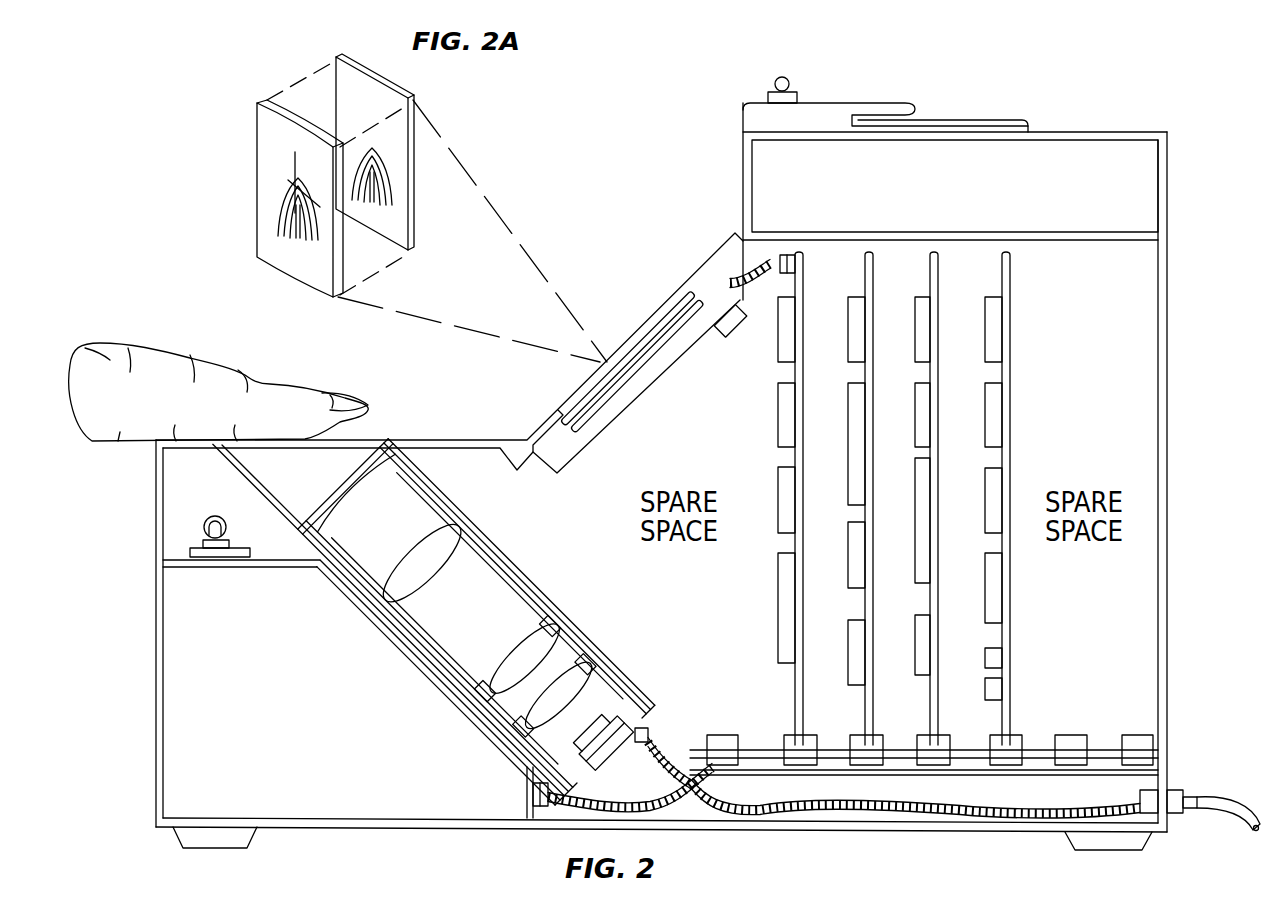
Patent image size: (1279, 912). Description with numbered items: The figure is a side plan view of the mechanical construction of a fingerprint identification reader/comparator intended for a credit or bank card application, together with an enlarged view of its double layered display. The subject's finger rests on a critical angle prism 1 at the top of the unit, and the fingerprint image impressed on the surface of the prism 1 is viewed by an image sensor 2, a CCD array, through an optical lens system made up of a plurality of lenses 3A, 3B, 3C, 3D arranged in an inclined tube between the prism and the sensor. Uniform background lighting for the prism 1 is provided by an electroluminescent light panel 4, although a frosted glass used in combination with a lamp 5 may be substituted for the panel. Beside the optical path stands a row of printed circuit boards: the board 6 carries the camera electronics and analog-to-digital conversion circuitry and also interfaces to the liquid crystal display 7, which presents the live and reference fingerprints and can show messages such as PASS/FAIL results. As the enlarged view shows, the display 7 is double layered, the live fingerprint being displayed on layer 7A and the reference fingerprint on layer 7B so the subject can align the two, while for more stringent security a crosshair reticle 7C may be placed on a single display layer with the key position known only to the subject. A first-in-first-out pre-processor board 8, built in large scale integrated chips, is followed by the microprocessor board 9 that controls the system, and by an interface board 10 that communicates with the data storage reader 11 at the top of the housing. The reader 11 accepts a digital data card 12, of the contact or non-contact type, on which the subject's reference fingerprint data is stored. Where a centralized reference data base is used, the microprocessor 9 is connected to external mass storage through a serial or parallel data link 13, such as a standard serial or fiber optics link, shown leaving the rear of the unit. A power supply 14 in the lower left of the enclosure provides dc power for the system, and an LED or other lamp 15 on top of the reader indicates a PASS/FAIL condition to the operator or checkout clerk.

In FIG. 2, the critical angle prism 1 is at (367, 438).
In FIG. 2, the image sensor 2 is at (597, 737).
In FIG. 2, the lens 3A is at (374, 491).
In FIG. 2, the lens 3B is at (436, 542).
In FIG. 2, the lens 3C is at (529, 640).
In FIG. 2, the lens 3D is at (577, 677).
In FIG. 2, the electroluminescent light panel 4 is at (250, 480).
In FIG. 2, the lamp 5 is at (203, 527).
In FIG. 2, the printed circuit board 6 is at (778, 603).
In FIG. 2, the liquid crystal display 7 is at (637, 337).
In FIG. 2A, the display layer 7A is at (262, 114).
In FIG. 2A, the display layer 7B is at (347, 78).
In FIG. 2A, the crosshair reticle 7C is at (277, 182).
In FIG. 2, the FIFO pre-processor board 8 is at (863, 603).
In FIG. 2, the microprocessor board 9 is at (928, 603).
In FIG. 2, the interface board 10 is at (985, 603).
In FIG. 2, the data storage reader 11 is at (1070, 156).
In FIG. 2, the digital data card 12 is at (933, 117).
In FIG. 2, the data link 13 is at (1200, 797).
In FIG. 2, the power supply 14 is at (186, 653).
In FIG. 2, the lamp 15 is at (789, 78).